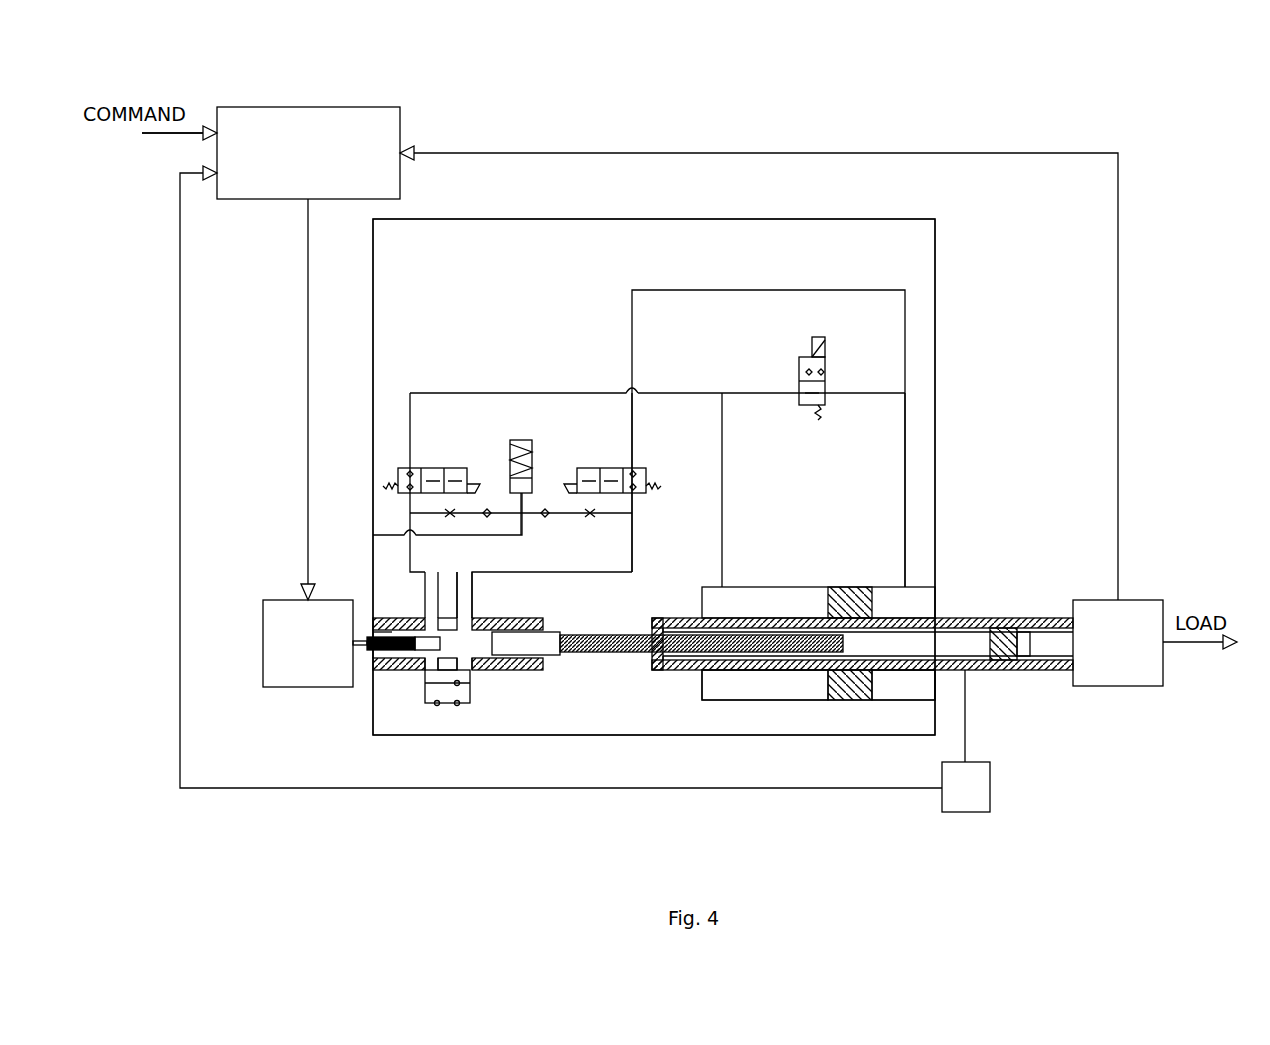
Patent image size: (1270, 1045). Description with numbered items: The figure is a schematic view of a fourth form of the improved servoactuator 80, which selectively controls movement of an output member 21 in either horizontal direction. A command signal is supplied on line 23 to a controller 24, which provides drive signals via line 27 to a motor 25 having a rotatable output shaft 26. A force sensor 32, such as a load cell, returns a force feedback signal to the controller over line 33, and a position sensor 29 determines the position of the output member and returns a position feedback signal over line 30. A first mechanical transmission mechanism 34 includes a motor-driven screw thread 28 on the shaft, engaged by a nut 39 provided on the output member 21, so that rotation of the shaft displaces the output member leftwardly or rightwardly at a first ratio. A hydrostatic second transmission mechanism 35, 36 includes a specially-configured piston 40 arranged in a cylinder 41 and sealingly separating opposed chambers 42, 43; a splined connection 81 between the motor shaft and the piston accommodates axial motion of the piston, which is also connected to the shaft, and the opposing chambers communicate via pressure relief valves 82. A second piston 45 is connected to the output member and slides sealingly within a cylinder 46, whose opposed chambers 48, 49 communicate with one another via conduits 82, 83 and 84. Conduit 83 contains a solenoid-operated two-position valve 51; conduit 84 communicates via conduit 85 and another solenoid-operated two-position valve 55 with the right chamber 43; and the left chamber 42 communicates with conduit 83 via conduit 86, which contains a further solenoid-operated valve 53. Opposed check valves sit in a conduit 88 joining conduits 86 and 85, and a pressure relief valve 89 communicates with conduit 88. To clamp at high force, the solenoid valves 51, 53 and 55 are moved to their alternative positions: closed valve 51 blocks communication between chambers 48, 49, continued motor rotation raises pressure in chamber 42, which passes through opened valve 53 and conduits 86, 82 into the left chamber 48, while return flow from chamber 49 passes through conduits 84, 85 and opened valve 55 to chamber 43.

The servoactuator 80 is at (805, 70).
The controller 24 is at (307, 107).
The line 23 is at (170, 135).
The line 27 is at (305, 345).
The line 33 is at (1120, 262).
The line 30 is at (280, 790).
The position sensor 29 is at (995, 812).
The force sensor 32 is at (1165, 687).
The motor 25 is at (292, 690).
The first transmission mechanism 34 is at (680, 705).
The conduit 85 is at (757, 290).
The conduit 83 is at (748, 390).
The conduit 82 is at (727, 495).
The conduit 84 is at (900, 478).
The solenoid-operated two-position valve 51 is at (797, 355).
The second transmission mechanism 36 is at (505, 390).
The conduit 86 is at (418, 420).
The solenoid-operated valve 53 is at (470, 444).
The pressure relief valve 89 is at (535, 445).
The solenoid-operated two-position valve 55 is at (588, 465).
The conduit 88 is at (540, 516).
The piston 40 is at (448, 614).
The left chamber 42 is at (423, 616).
The right chamber 43 is at (473, 620).
The second transmission mechanism 35 is at (530, 693).
The cylinder 41 is at (497, 660).
The splined connection 81 is at (383, 660).
The output shaft 26 is at (552, 630).
The externally-threaded portion 28 is at (603, 623).
The nut 39 is at (653, 655).
The output member 21 is at (965, 618).
The cylinder 46 is at (807, 587).
The second piston 45 is at (858, 587).
The left chamber 48 is at (786, 698).
The right chamber 49 is at (917, 698).